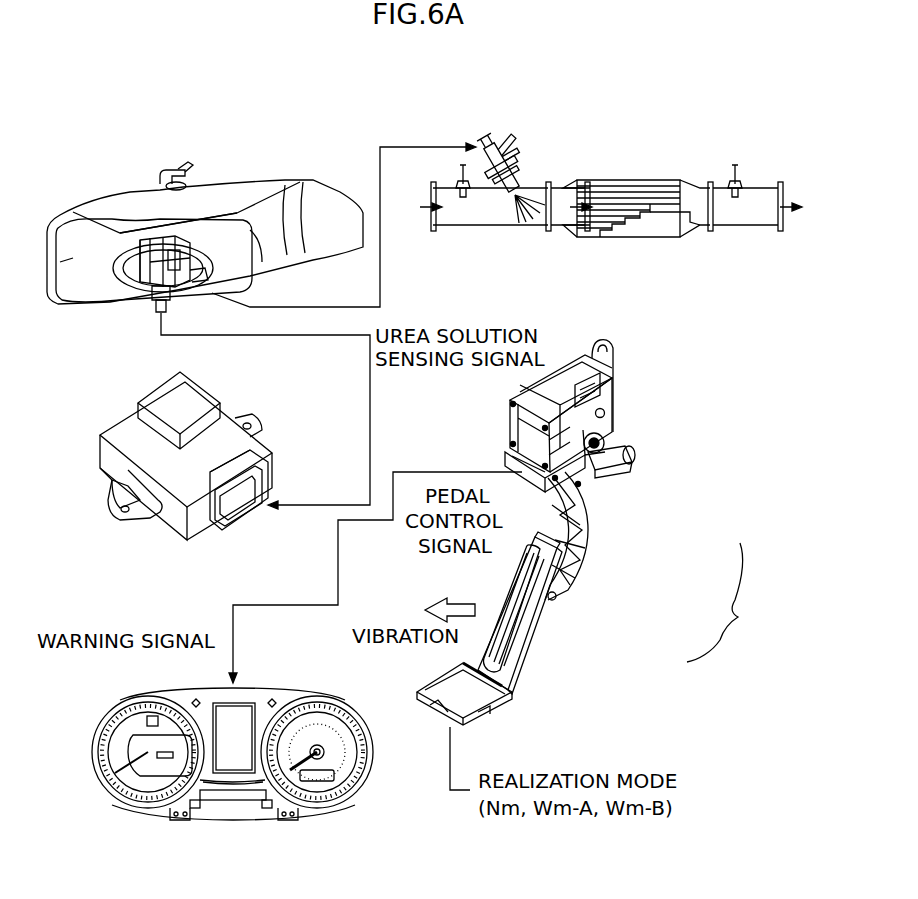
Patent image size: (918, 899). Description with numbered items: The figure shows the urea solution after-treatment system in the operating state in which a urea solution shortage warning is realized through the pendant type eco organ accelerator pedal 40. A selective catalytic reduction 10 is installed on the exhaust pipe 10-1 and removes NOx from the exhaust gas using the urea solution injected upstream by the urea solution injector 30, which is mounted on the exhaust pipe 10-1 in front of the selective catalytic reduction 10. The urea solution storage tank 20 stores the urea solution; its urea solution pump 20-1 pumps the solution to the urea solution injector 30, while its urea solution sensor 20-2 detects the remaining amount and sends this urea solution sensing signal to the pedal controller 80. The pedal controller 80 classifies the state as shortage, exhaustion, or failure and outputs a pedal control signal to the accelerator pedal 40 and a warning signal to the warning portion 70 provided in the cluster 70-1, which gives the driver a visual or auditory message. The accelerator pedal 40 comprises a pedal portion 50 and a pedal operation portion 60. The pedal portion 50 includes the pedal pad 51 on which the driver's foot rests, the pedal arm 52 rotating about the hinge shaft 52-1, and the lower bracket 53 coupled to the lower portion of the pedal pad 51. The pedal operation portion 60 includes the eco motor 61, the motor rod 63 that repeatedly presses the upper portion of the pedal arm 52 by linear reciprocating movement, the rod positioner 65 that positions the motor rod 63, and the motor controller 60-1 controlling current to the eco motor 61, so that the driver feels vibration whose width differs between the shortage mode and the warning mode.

The selective catalytic reduction 10 is at (637, 187).
The exhaust pipe 10-1 is at (495, 218).
The urea solution storage tank 20 is at (267, 193).
The urea solution pump 20-1 is at (173, 253).
The urea solution sensor 20-2 is at (150, 290).
The urea solution injector 30 is at (530, 152).
The accelerator pedal 40 is at (718, 423).
The pedal portion 50 is at (724, 602).
The pedal pad 51 is at (533, 607).
The pedal arm 52 is at (595, 532).
The hinge shaft 52-1 is at (605, 448).
The lower bracket 53 is at (510, 693).
The pedal operation portion 60 is at (723, 333).
The motor controller 60-1 is at (523, 473).
The eco motor 61 is at (540, 397).
The motor rod 63 is at (620, 345).
The rod positioner 65 is at (613, 382).
The warning portion 70 is at (240, 722).
The cluster 70-1 is at (232, 790).
The pedal controller 80 is at (178, 520).